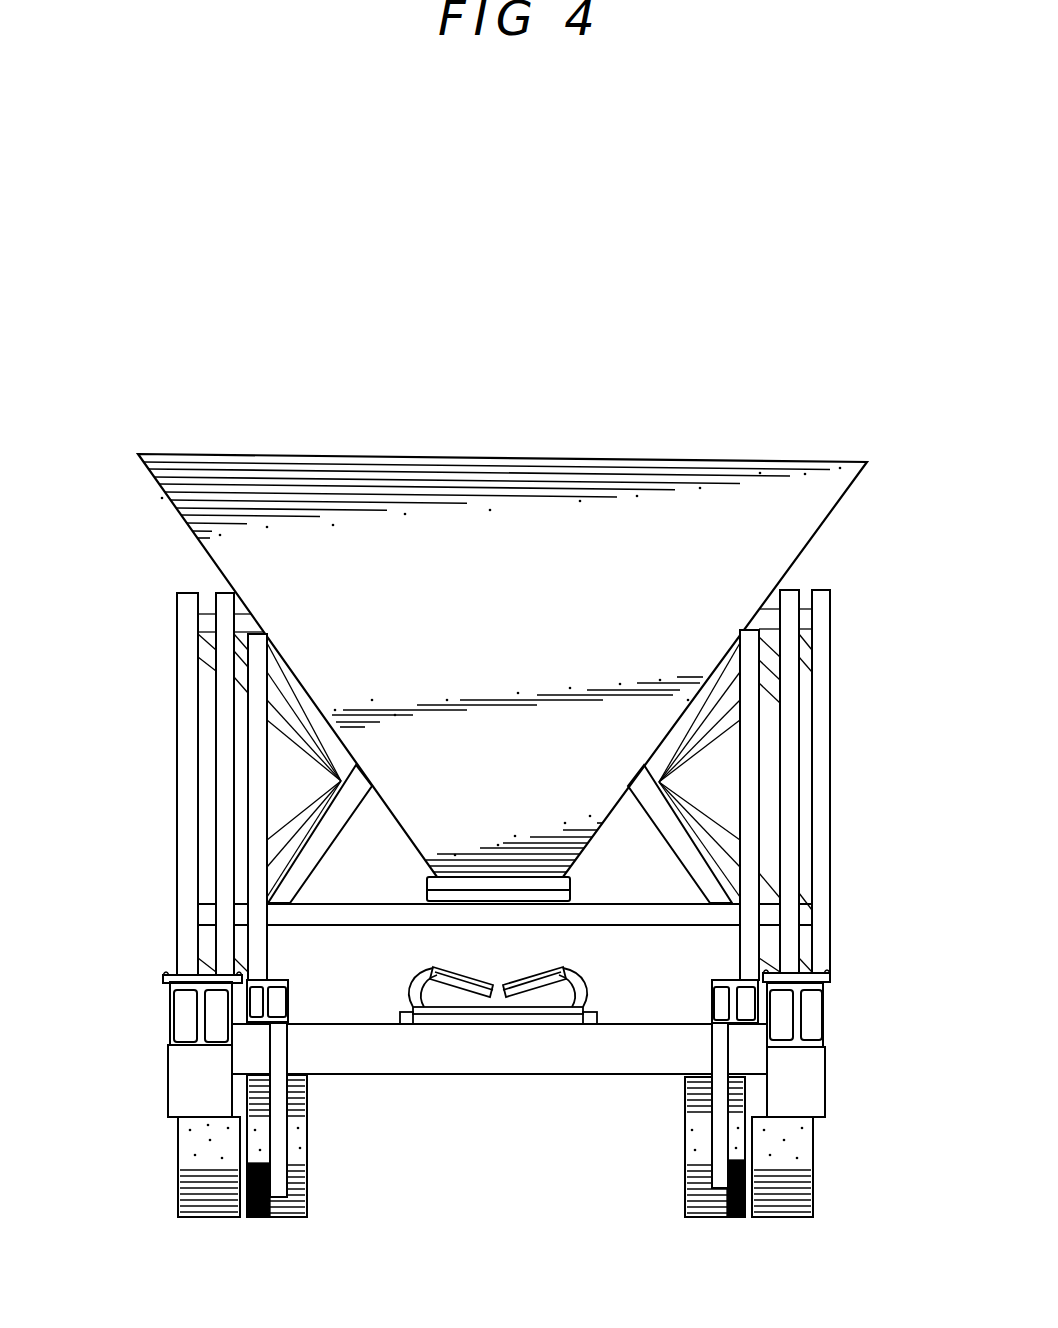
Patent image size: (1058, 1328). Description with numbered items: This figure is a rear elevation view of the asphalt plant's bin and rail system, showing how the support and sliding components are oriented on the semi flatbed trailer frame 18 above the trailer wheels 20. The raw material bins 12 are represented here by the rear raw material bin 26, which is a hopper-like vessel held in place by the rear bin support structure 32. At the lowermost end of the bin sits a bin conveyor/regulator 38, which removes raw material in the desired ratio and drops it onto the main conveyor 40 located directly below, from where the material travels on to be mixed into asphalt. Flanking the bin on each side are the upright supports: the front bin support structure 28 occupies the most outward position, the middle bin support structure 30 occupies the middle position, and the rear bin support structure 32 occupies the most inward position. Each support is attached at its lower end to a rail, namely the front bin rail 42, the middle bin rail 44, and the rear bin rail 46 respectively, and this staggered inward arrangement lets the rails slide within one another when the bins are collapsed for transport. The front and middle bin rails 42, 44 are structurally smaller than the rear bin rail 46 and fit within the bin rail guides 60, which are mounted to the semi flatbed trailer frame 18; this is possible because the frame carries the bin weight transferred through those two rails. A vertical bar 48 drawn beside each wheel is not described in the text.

The raw material bins 12 is at (378, 386).
The semi flatbed trailer frame 18 is at (162, 1019).
The trailer wheels 20 is at (676, 1118).
The rear raw material bin 26 is at (541, 553).
The front bin support structure 28 is at (189, 711).
The middle bin support structure 30 is at (226, 763).
The rear bin support structure 32 is at (257, 803).
The bin conveyor/regulator 38 is at (572, 888).
The main conveyor 40 is at (497, 977).
The front bin rail 42 is at (188, 967).
The middle bin rail 44 is at (216, 967).
The rear bin rail 46 is at (296, 986).
The vertical support bar 48 is at (724, 1188).
The bin rail guides 60 is at (160, 984).